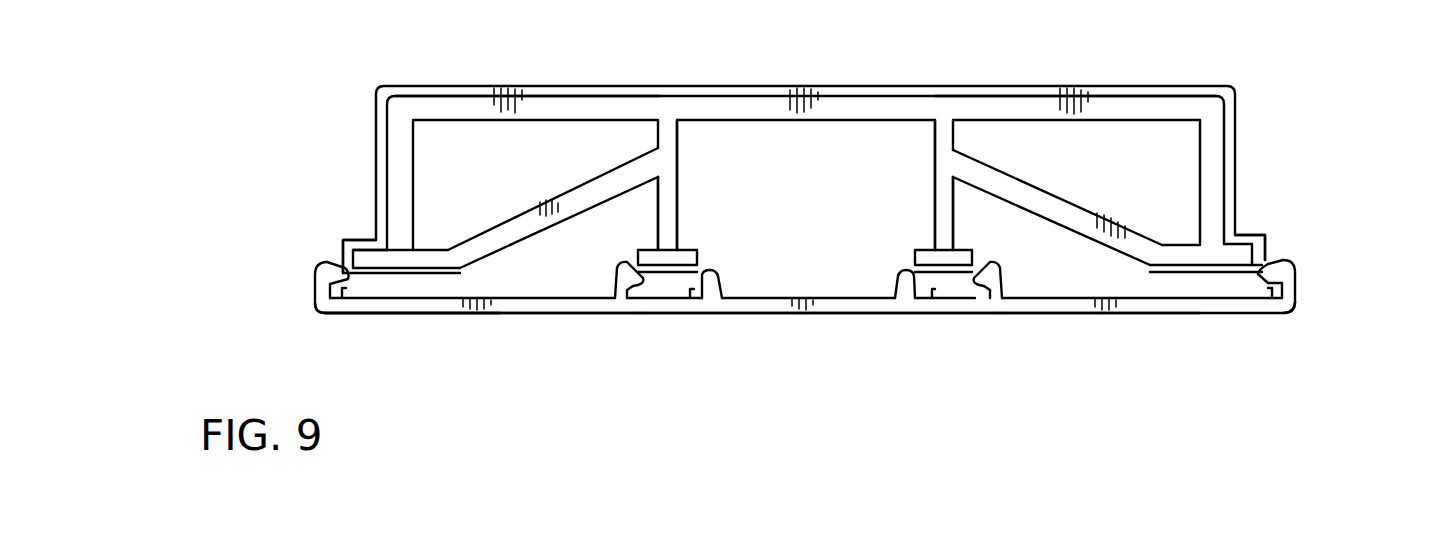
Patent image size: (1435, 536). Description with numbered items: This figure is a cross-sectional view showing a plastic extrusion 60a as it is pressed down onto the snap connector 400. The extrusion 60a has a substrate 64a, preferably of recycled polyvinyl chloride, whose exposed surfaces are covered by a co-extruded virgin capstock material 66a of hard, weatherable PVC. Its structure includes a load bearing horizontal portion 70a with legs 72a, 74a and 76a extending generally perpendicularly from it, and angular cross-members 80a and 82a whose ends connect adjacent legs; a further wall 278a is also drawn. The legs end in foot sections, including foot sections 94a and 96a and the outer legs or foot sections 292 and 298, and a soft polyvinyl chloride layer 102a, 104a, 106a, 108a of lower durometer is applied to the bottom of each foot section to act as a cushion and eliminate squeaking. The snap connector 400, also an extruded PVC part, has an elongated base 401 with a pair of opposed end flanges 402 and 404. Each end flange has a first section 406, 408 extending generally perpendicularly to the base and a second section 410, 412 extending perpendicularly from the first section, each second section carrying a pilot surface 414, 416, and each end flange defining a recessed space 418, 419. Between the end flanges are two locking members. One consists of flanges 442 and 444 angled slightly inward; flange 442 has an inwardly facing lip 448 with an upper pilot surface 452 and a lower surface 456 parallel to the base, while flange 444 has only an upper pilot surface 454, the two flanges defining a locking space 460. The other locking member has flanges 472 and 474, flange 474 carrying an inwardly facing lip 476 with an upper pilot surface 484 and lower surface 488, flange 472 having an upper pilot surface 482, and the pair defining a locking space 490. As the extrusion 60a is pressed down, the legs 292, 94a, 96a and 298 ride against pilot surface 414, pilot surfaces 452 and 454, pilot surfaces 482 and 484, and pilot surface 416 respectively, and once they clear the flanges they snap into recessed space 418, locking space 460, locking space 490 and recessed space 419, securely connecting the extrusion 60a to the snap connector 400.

The plastic extrusion 60a is at (1080, 75).
The substrate 64a is at (857, 100).
The virgin capstock material 66a is at (743, 97).
The load bearing horizontal portion 70a is at (550, 100).
The leg 72a is at (422, 159).
The leg 74a is at (684, 162).
The leg 76a is at (928, 161).
The angular cross-member 80a is at (533, 205).
The angular cross-member 82a is at (1040, 198).
The foot section 94a is at (642, 247).
The foot section 96a is at (969, 246).
The channel wall 278a is at (1193, 164).
The foot section 292 is at (372, 242).
The foot section 298 is at (1245, 245).
The snap connector 400 is at (1290, 320).
The elongated base 401 is at (1122, 313).
The end flange 402 is at (314, 318).
The end flange 404 is at (1308, 271).
The first section 406 is at (316, 292).
The first section 408 is at (1300, 284).
The second section 410 is at (333, 267).
The second section 412 is at (1287, 260).
The pilot surface 414 is at (343, 262).
The pilot surface 416 is at (1267, 240).
The recessed space 418 is at (391, 274).
The recessed space 419 is at (1274, 283).
The flange 442 is at (612, 287).
The flange 444 is at (725, 283).
The inwardly facing lip 448 is at (618, 267).
The upper pilot surface 452 is at (637, 262).
The upper pilot surface 454 is at (705, 273).
The lower surface 456 is at (637, 302).
The locking space 460 is at (692, 292).
The flange 472 is at (895, 282).
The flange 474 is at (1001, 287).
The inwardly facing lip 476 is at (996, 272).
The upper pilot surface 482 is at (908, 270).
The upper pilot surface 484 is at (980, 267).
The lower surface 488 is at (982, 287).
The locking space 490 is at (930, 288).
The soft polyvinyl chloride layer 102a is at (349, 293).
The soft polyvinyl chloride layer 104a is at (682, 273).
The soft polyvinyl chloride layer 106a is at (938, 277).
The soft polyvinyl chloride layer 108a is at (1235, 275).